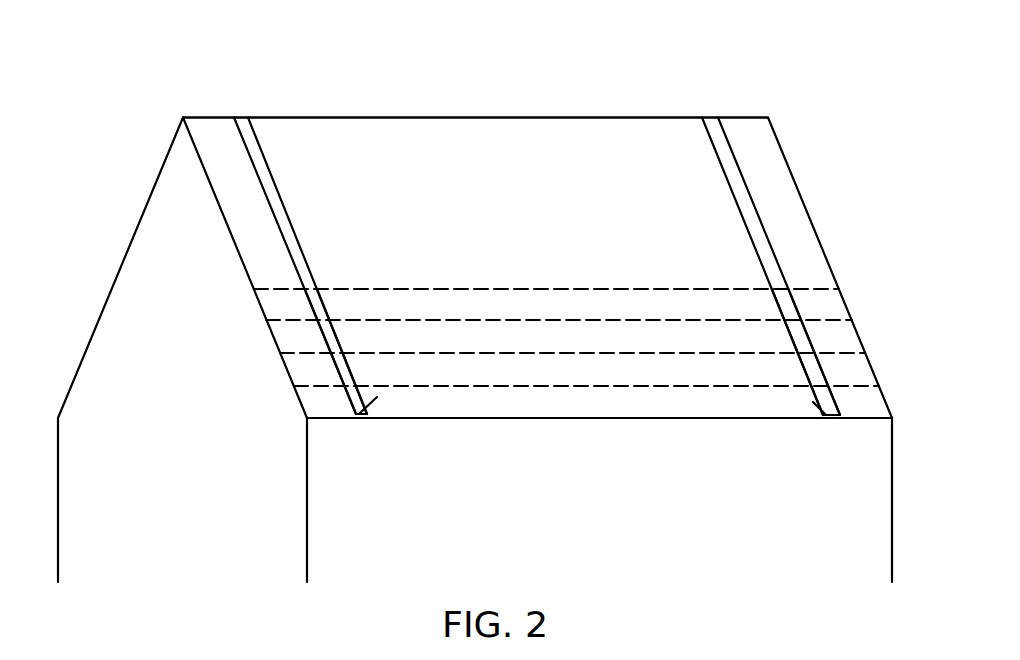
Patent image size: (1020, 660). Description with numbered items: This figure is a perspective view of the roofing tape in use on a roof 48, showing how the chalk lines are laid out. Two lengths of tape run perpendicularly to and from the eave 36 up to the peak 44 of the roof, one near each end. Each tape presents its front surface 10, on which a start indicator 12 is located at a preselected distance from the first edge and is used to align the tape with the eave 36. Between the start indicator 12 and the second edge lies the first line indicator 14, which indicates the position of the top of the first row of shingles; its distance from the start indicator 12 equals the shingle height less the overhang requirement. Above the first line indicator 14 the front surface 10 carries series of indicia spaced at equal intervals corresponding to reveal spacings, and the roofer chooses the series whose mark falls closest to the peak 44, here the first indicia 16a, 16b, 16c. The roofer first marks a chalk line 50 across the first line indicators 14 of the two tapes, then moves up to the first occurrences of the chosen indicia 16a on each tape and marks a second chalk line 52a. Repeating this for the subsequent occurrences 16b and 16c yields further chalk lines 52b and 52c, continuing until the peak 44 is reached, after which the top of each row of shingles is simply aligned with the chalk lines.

The front surface 10 is at (715, 126).
The start indicator 12 is at (813, 402).
The first line indicator 14 is at (822, 385).
The first indicia 16a is at (808, 353).
The first indicia 16b is at (793, 320).
The first indicia 16c is at (777, 290).
The eave 36 is at (577, 418).
The peak 44 is at (425, 116).
The roof 48 is at (547, 135).
The chalk line 50 is at (858, 385).
The second chalk line 52a is at (840, 353).
The chalk line 52b is at (827, 320).
The chalk line 52c is at (817, 290).